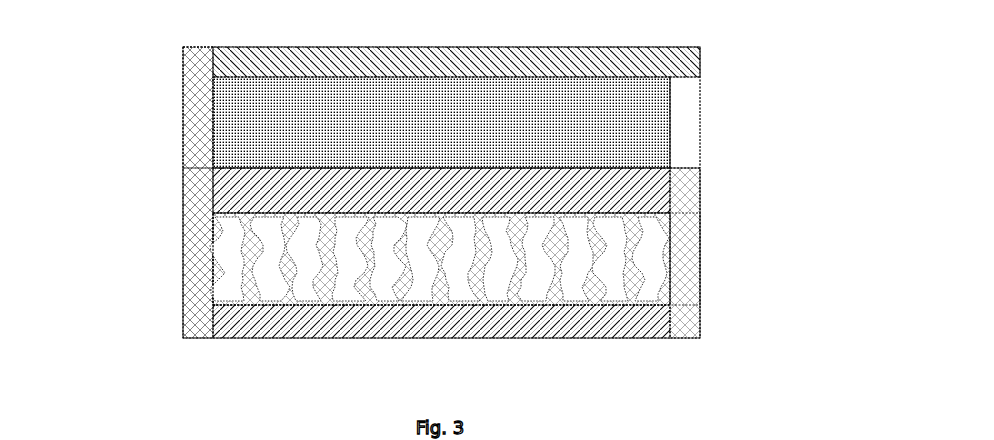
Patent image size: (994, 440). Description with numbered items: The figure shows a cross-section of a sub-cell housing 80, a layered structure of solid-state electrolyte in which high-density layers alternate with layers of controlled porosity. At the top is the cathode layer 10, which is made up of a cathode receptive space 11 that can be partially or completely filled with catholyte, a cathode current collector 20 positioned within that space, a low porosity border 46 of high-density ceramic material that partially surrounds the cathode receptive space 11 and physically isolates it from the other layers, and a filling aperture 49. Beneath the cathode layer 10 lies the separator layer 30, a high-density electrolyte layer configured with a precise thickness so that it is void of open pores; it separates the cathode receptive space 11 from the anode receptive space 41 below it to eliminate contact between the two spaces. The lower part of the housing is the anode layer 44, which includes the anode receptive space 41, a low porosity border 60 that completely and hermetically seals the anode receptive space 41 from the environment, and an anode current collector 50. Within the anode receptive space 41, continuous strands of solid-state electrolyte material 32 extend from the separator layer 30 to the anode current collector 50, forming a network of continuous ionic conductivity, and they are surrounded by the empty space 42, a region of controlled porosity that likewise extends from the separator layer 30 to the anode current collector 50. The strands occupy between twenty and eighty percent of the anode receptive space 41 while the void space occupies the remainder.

The sub-cell housing 80 is at (731, 25).
The cathode layer 10 is at (703, 47).
The cathode current collector 20 is at (232, 68).
The cathode receptive space 11 is at (422, 100).
The low porosity border 46 is at (178, 80).
The filling aperture 49 is at (683, 113).
The separator layer 30 is at (240, 190).
The low porosity border 60 is at (178, 220).
The solid-state electrolyte material 32 is at (293, 276).
The empty space 42 is at (307, 292).
The anode receptive space 41 is at (677, 213).
The anode layer 44 is at (727, 210).
The anode current collector 50 is at (475, 330).